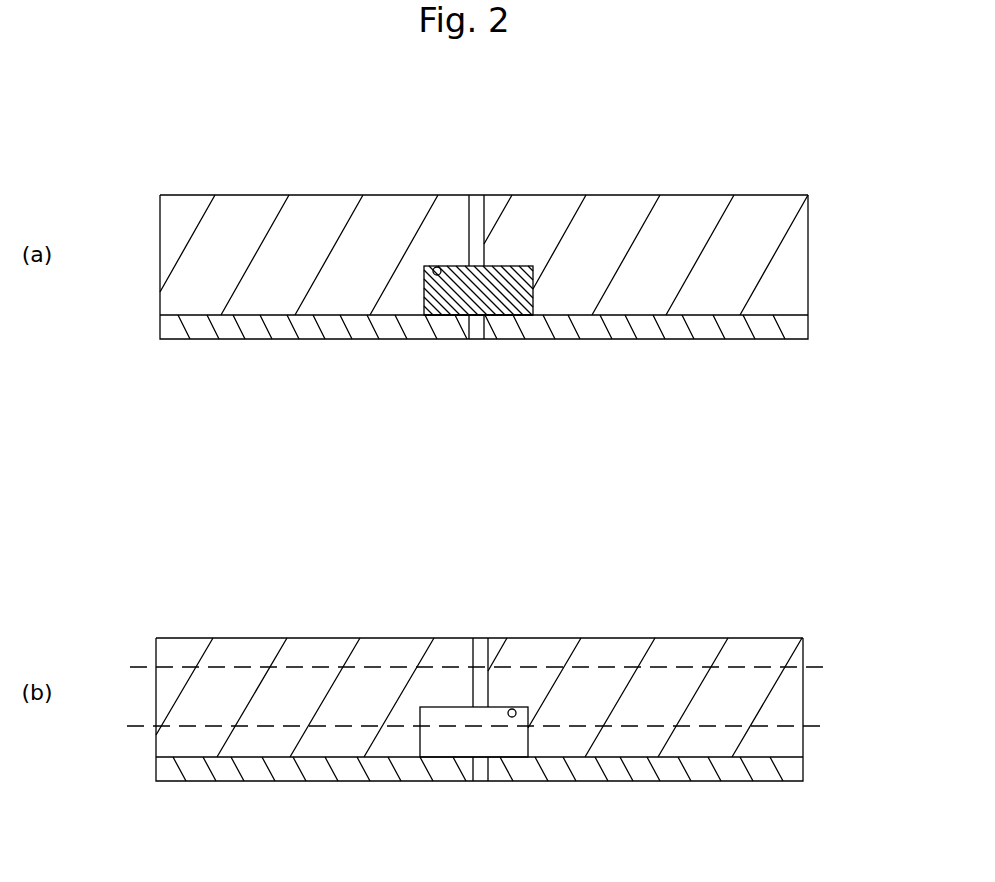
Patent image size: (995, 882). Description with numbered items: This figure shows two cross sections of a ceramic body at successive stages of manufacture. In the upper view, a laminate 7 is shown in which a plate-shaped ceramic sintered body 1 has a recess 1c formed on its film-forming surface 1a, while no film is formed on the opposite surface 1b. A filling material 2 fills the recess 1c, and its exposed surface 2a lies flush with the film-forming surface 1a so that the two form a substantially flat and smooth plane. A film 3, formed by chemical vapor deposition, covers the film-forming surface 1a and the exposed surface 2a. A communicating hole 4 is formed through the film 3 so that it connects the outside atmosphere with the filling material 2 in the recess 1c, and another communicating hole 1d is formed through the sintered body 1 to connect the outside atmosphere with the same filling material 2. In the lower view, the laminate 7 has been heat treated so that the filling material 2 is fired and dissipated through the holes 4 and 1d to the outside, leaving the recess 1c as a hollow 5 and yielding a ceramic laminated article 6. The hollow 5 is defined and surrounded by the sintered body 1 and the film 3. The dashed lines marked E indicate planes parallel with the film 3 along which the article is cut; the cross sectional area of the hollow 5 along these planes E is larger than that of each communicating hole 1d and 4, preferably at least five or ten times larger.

The ceramic sintered body 1 is at (787, 273).
The film-forming surface 1a is at (603, 339).
The opposite surface 1b is at (645, 196).
The recess 1c is at (436, 268).
The communicating hole 1d is at (482, 211).
The filling material 2 is at (518, 297).
The exposed surface 2a is at (447, 315).
The film 3 is at (563, 334).
The communicating hole 4 is at (481, 326).
The hollow 5 is at (513, 709).
The ceramic laminated article 6 is at (802, 619).
The laminate 7 is at (812, 175).
The planes E is at (310, 665).